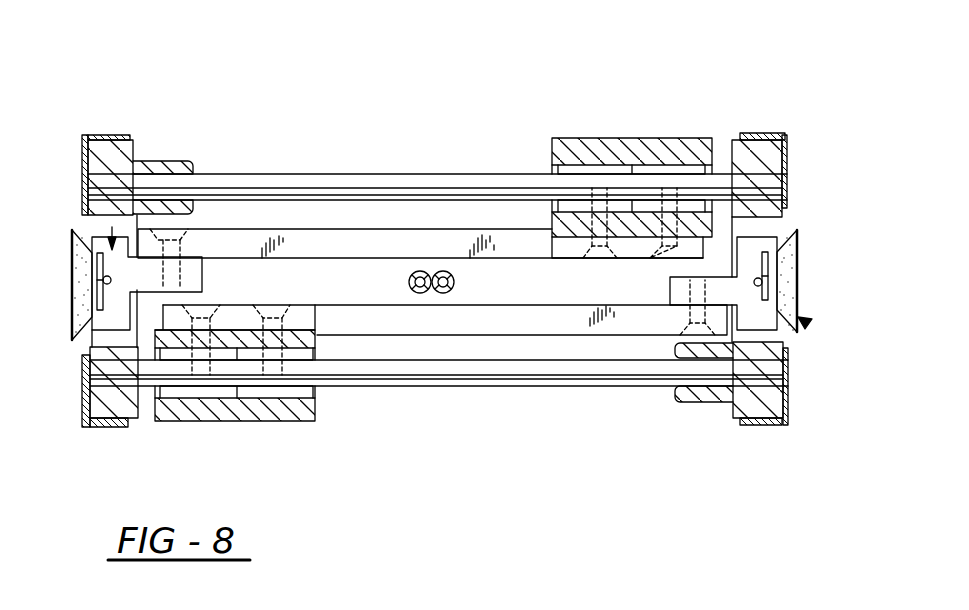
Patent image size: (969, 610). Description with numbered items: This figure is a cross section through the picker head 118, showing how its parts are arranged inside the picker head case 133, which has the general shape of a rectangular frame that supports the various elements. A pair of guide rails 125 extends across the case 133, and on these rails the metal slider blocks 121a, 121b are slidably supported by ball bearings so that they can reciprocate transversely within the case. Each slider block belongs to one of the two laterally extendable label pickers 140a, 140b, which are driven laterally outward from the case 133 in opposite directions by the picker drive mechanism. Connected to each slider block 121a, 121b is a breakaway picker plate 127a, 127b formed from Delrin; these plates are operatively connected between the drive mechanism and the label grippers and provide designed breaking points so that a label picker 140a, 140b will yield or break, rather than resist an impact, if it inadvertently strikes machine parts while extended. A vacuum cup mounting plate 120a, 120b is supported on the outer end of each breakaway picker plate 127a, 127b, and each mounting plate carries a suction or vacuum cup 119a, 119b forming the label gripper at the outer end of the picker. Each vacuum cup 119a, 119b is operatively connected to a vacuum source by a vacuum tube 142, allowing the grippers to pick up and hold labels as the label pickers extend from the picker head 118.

The picker head 118 is at (784, 129).
The picker head case 133 is at (108, 145).
The guide rails 125 is at (260, 183).
The slider block 121a is at (263, 413).
The slider block 121b is at (628, 145).
The picker plate 127a is at (567, 322).
The picker plate 127b is at (347, 242).
The vacuum cup mounting plate 120a is at (100, 325).
The vacuum cup mounting plate 120b is at (752, 252).
The vacuum cup 119a is at (75, 250).
The vacuum cup 119b is at (790, 262).
The label picker 140a is at (112, 228).
The label picker 140b is at (806, 322).
The vacuum tube 142 is at (422, 270).